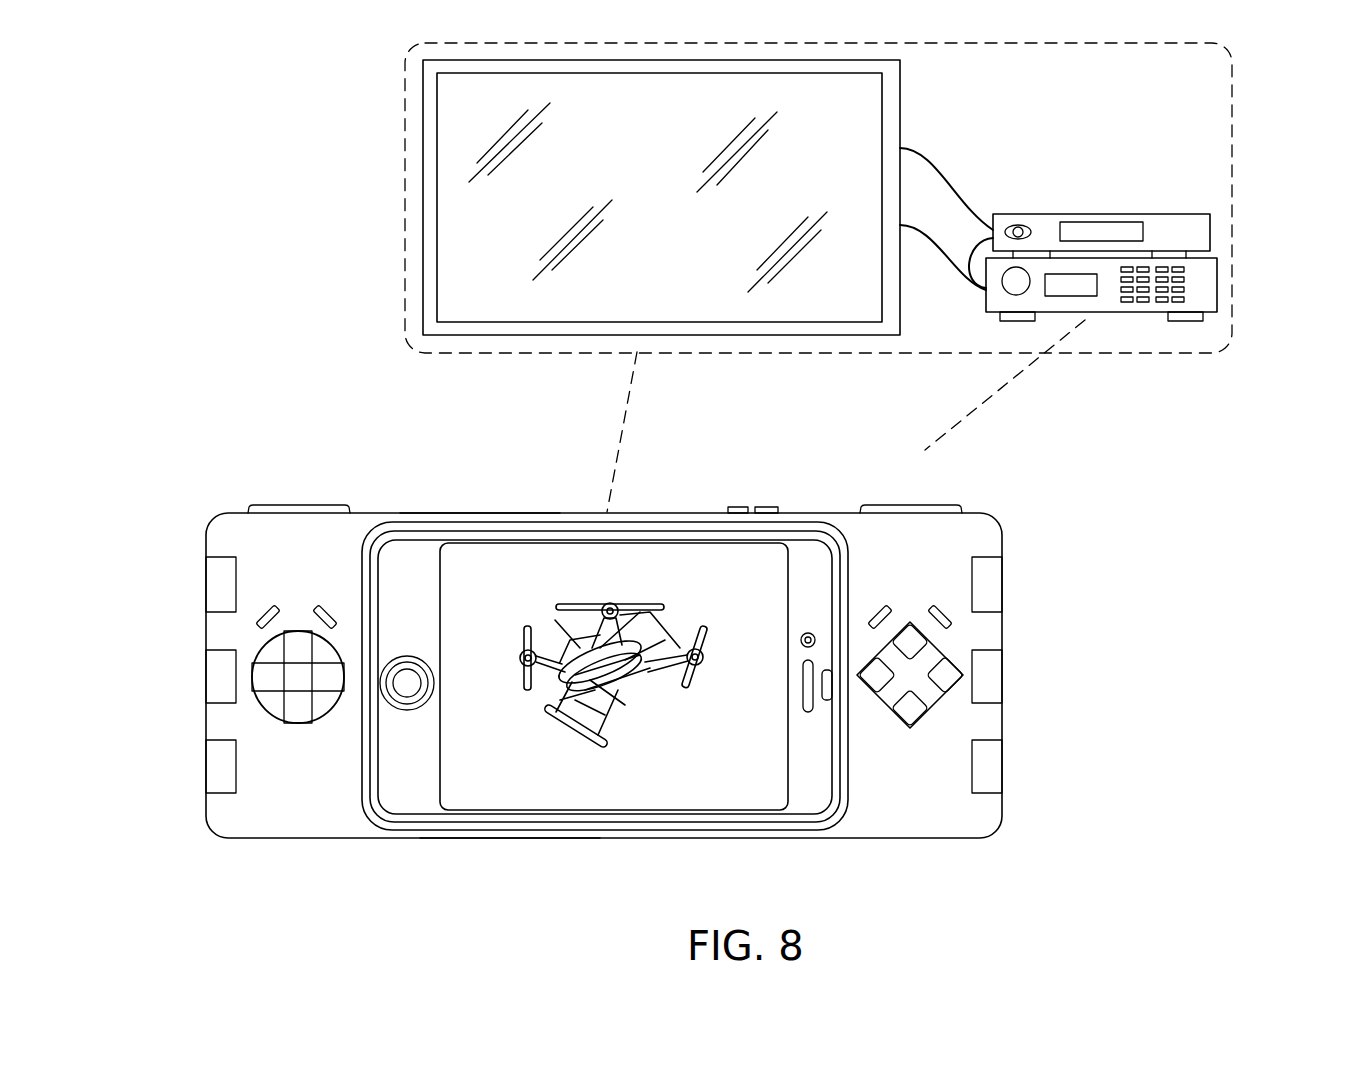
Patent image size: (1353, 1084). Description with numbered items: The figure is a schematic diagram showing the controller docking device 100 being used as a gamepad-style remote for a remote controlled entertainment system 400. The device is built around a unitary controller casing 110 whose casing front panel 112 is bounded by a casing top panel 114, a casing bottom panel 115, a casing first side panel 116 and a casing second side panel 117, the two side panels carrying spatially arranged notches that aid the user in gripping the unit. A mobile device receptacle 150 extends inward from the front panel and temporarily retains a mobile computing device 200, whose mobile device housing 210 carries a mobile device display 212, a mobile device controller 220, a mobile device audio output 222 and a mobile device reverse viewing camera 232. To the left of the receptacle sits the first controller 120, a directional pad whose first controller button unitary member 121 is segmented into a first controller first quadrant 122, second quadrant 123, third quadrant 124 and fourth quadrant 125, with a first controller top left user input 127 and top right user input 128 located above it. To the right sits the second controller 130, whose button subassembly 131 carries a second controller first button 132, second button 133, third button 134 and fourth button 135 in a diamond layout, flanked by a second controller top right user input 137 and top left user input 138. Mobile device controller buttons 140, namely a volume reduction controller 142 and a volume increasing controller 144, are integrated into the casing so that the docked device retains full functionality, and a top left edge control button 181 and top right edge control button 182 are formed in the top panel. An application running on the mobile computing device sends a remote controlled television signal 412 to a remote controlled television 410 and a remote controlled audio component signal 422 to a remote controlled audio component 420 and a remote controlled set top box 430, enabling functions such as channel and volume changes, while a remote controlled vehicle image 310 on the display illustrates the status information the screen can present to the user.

The controller docking device 100 is at (172, 385).
The controller casing 110 is at (930, 802).
The casing front panel 112 is at (290, 808).
The casing top panel 114 is at (535, 511).
The casing bottom panel 115 is at (510, 840).
The casing first side panel 116 is at (210, 770).
The casing second side panel 117 is at (1002, 765).
The first controller 120 is at (278, 663).
The first controller button unitary member 121 is at (253, 653).
The first controller first quadrant 122 is at (303, 645).
The first controller second quadrant 123 is at (343, 673).
The first controller third quadrant 124 is at (297, 708).
The first controller fourth quadrant 125 is at (262, 680).
The first controller top left user input 127 is at (263, 614).
The first controller top right user input 128 is at (333, 610).
The second controller 130 is at (959, 680).
The button subassembly 131 is at (925, 705).
The second controller first button 132 is at (928, 652).
The second controller second button 133 is at (958, 690).
The second controller third button 134 is at (925, 725).
The second controller fourth button 135 is at (866, 688).
The second controller top right user input 137 is at (946, 616).
The second controller top left user input 138 is at (880, 610).
The mobile device controller buttons 140 is at (750, 492).
The volume reduction controller 142 is at (736, 506).
The volume increasing controller 144 is at (765, 506).
The mobile device receptacle 150 is at (368, 785).
The top left edge control button 181 is at (300, 506).
The top right edge control button 182 is at (898, 506).
The mobile computing device 200 is at (648, 710).
The mobile device housing 210 is at (800, 805).
The mobile device display 212 is at (690, 780).
The mobile device controller 220 is at (412, 684).
The mobile device audio output 222 is at (800, 684).
The mobile device reverse viewing camera 232 is at (806, 633).
The remote controlled vehicle image 310 is at (565, 735).
The remote controlled entertainment system 400 is at (405, 130).
The remote controlled television 410 is at (423, 195).
The remote controlled television signal 412 is at (615, 408).
The remote controlled audio component 420 is at (1222, 282).
The remote controlled audio component signal 422 is at (1000, 405).
The remote controlled set top box 430 is at (1215, 228).